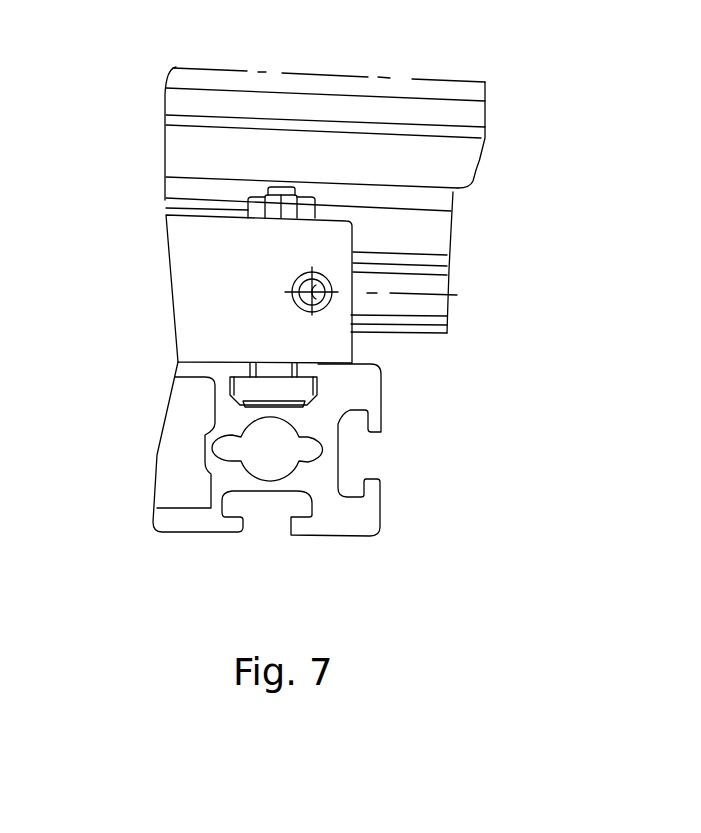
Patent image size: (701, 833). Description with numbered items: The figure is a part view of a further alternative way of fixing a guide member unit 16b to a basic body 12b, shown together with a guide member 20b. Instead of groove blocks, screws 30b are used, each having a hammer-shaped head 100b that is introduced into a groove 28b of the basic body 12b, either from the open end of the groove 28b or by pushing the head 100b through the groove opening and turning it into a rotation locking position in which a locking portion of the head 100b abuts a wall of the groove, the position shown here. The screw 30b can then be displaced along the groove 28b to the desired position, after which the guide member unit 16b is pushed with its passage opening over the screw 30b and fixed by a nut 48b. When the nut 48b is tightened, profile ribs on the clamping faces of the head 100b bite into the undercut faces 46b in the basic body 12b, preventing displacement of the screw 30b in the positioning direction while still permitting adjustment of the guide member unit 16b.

The basic body 12b is at (381, 522).
The guide member unit 16b is at (200, 278).
The linear guide rail 20b is at (450, 240).
The groove 28b is at (318, 383).
The screw 30b is at (283, 187).
The undercut face 46b is at (307, 372).
The nut 48b is at (248, 212).
The screw head 100b is at (300, 407).